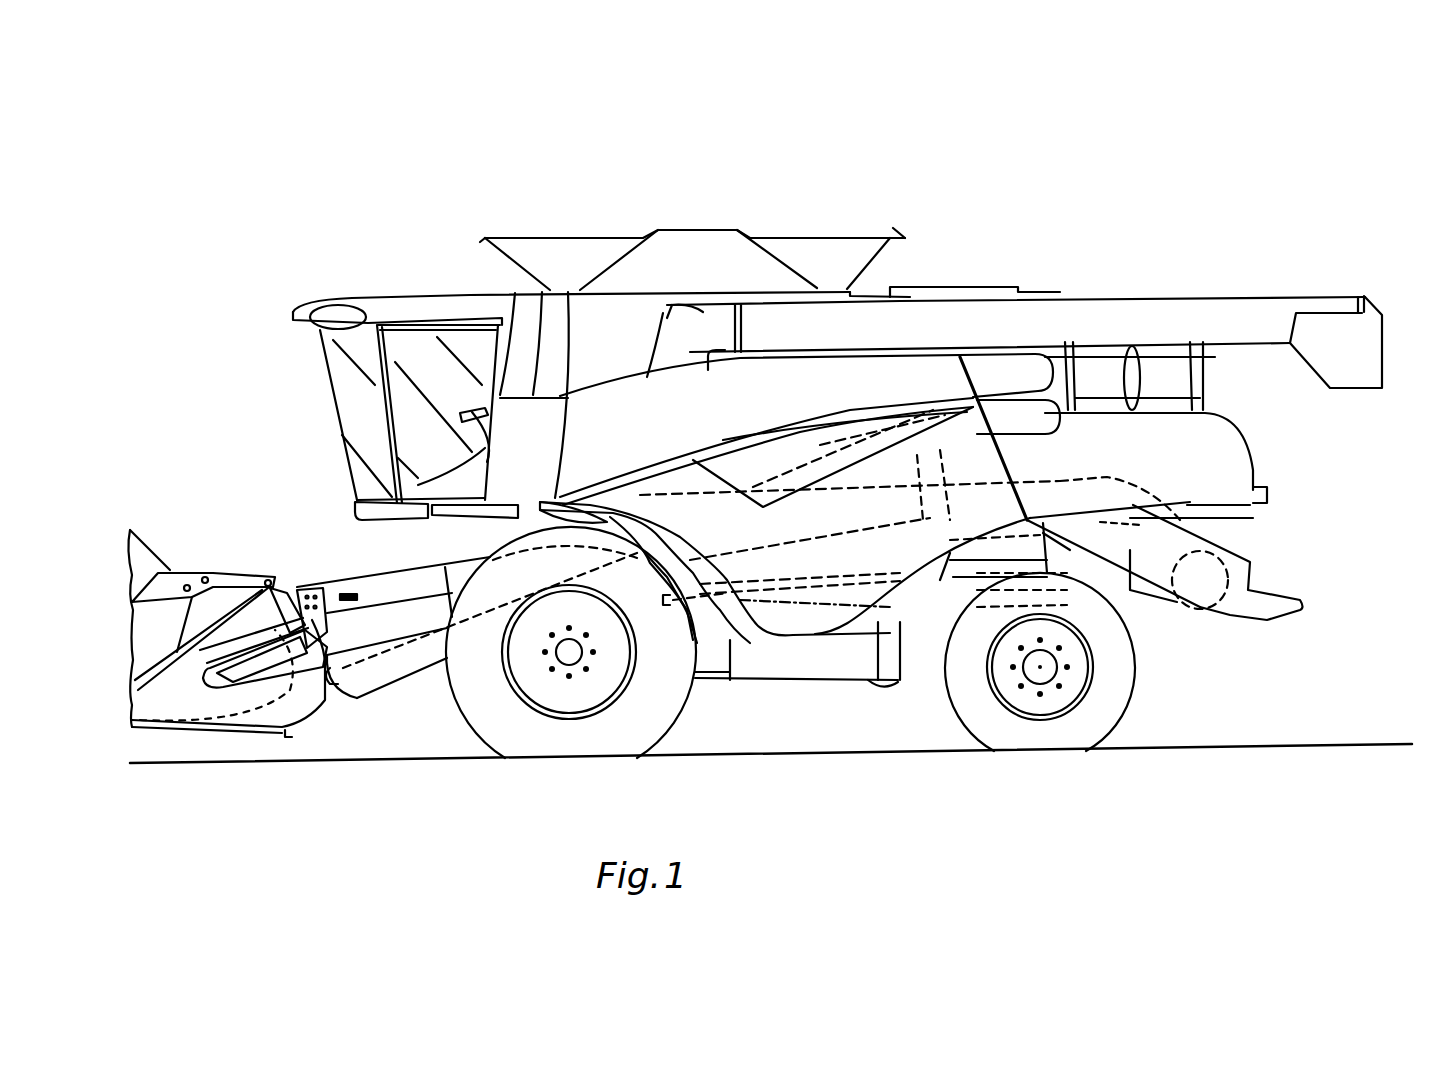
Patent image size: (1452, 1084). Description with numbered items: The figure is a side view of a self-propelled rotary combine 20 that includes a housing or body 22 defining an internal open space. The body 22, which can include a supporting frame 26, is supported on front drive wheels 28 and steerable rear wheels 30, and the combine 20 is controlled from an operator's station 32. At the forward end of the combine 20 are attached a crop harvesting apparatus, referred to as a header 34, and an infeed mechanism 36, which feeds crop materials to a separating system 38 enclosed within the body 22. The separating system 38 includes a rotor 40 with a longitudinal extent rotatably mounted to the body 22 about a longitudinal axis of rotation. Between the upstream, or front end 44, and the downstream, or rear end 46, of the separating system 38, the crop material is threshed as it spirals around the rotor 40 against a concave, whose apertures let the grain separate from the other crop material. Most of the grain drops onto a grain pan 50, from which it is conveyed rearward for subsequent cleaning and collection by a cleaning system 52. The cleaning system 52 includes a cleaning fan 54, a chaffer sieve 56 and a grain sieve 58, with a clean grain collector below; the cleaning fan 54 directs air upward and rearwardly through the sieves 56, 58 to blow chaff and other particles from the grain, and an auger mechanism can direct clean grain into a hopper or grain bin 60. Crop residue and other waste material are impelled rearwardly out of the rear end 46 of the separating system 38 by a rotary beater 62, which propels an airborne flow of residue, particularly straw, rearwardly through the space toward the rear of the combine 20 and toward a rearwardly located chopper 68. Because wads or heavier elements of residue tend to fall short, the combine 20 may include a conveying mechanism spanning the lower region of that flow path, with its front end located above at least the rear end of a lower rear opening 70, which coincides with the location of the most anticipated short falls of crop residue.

The self-propelled rotary combine 20 is at (1338, 192).
The body 22 is at (1247, 455).
The supporting frame 26 is at (750, 683).
The front drive wheels 28 is at (438, 712).
The steerable rear wheels 30 is at (1133, 708).
The operator's station 32 is at (381, 296).
The header 34 is at (204, 560).
The infeed mechanism 36 is at (337, 571).
The separating system 38 is at (636, 487).
The rotor 40 is at (669, 495).
The front end 44 is at (548, 518).
The rear end 46 is at (920, 500).
The grain pan 50 is at (668, 597).
The cleaning system 52 is at (877, 622).
The cleaning fan 54 is at (800, 660).
The chaffer sieve 56 is at (877, 583).
The grain sieve 58 is at (1107, 612).
The grain bin 60 is at (857, 282).
The rotary beater 62 is at (958, 520).
The chopper 68 is at (1247, 562).
The lower rear opening 70 is at (1113, 590).